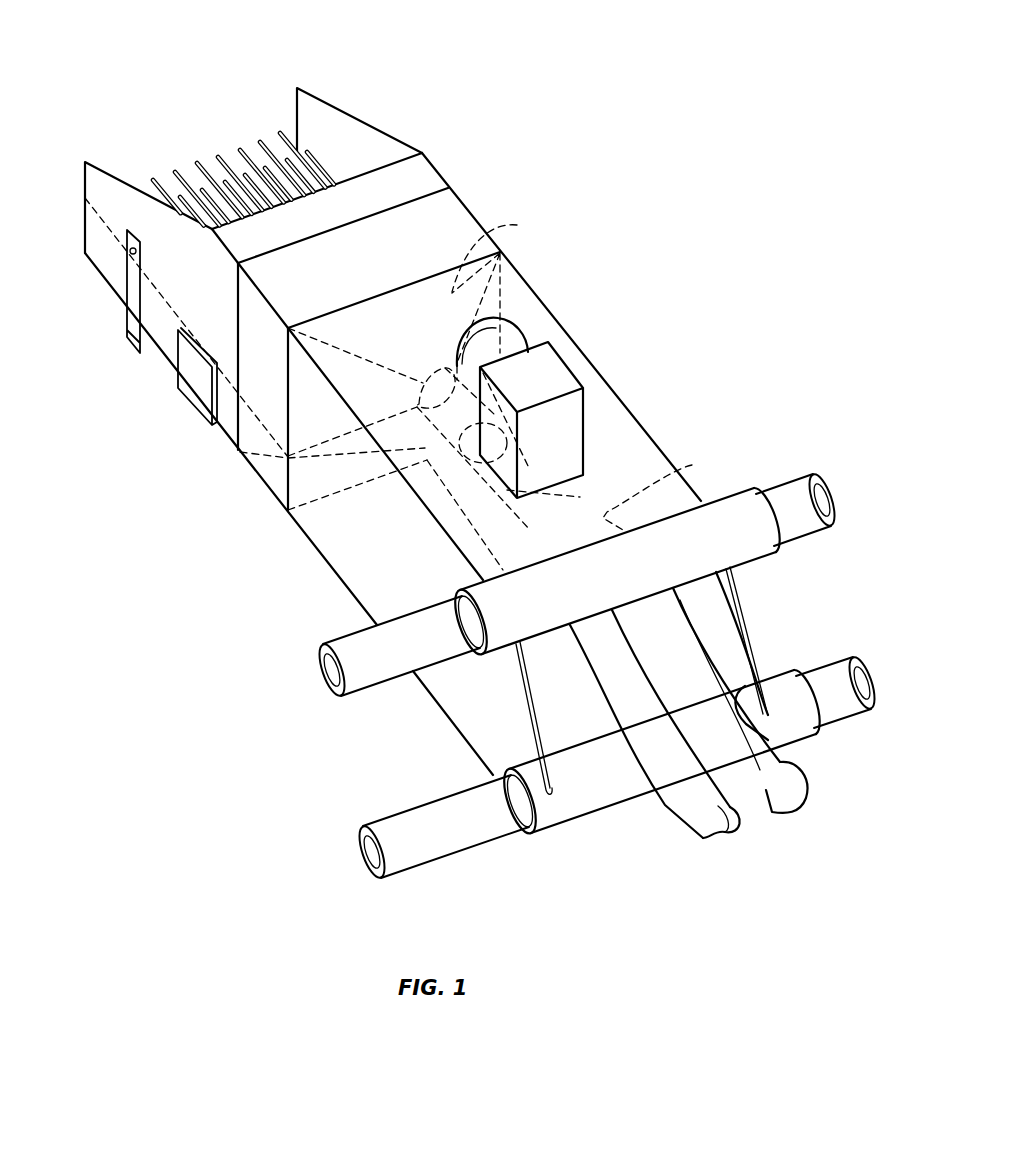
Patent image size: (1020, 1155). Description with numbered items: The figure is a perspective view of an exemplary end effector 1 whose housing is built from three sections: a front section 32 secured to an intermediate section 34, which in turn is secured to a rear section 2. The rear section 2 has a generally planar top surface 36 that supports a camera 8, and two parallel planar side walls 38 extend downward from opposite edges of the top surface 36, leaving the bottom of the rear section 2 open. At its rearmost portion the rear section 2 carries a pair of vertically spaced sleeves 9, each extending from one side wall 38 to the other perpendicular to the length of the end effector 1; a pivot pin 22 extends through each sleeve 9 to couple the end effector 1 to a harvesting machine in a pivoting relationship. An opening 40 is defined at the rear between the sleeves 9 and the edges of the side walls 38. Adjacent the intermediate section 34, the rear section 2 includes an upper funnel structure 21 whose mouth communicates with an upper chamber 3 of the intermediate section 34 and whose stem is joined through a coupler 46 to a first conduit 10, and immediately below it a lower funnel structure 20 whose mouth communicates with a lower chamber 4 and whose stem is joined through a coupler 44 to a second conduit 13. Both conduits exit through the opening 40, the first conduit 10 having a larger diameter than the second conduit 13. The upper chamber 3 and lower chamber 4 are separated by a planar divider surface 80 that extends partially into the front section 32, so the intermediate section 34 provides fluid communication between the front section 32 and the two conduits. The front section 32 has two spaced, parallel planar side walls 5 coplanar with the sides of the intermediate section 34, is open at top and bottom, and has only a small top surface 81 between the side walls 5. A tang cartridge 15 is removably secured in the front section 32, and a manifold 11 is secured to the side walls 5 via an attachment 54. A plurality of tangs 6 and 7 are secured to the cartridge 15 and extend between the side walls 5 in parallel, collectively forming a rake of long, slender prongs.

The end effector 1 is at (650, 97).
The rear section 2 is at (523, 268).
The upper chamber 3 is at (262, 393).
The lower chamber 4 is at (269, 460).
The side walls 5 is at (163, 328).
The tangs 6 is at (257, 136).
The tangs 7 is at (215, 176).
The camera 8 is at (519, 325).
The sleeves 9 is at (764, 530).
The first conduit 10 is at (837, 773).
The manifold 11 is at (123, 318).
The second conduit 13 is at (688, 818).
The tang cartridge 15 is at (196, 373).
The lower funnel structure 20 is at (320, 485).
The upper funnel structure 21 is at (499, 287).
The pivot pin 22 is at (793, 490).
The front section 32 is at (375, 114).
The intermediate section 34 is at (488, 208).
The top surface 36 is at (605, 437).
The side walls 38 is at (347, 548).
The opening 40 is at (723, 631).
The coupler 44 is at (477, 487).
The coupler 46 is at (333, 428).
The attachment 54 is at (128, 253).
The planar divider surface 80 is at (262, 397).
The top surface 81 is at (420, 180).